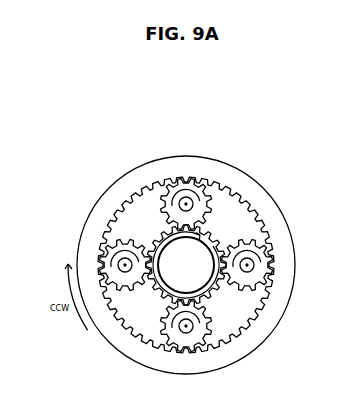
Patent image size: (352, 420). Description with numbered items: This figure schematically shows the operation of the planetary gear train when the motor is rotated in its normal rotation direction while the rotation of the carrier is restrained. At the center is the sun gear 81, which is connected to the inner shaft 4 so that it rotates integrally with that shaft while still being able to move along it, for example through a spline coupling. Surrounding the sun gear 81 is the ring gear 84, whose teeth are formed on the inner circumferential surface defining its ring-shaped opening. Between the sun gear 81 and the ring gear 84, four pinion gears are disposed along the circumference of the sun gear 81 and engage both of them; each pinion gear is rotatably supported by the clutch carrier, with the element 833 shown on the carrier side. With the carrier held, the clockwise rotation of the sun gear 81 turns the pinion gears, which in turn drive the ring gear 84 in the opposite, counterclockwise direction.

The inner shaft 4 is at (190, 270).
The sun gear 81 is at (218, 287).
The ring gear 84 is at (248, 192).
The carrier pin 833 is at (118, 252).